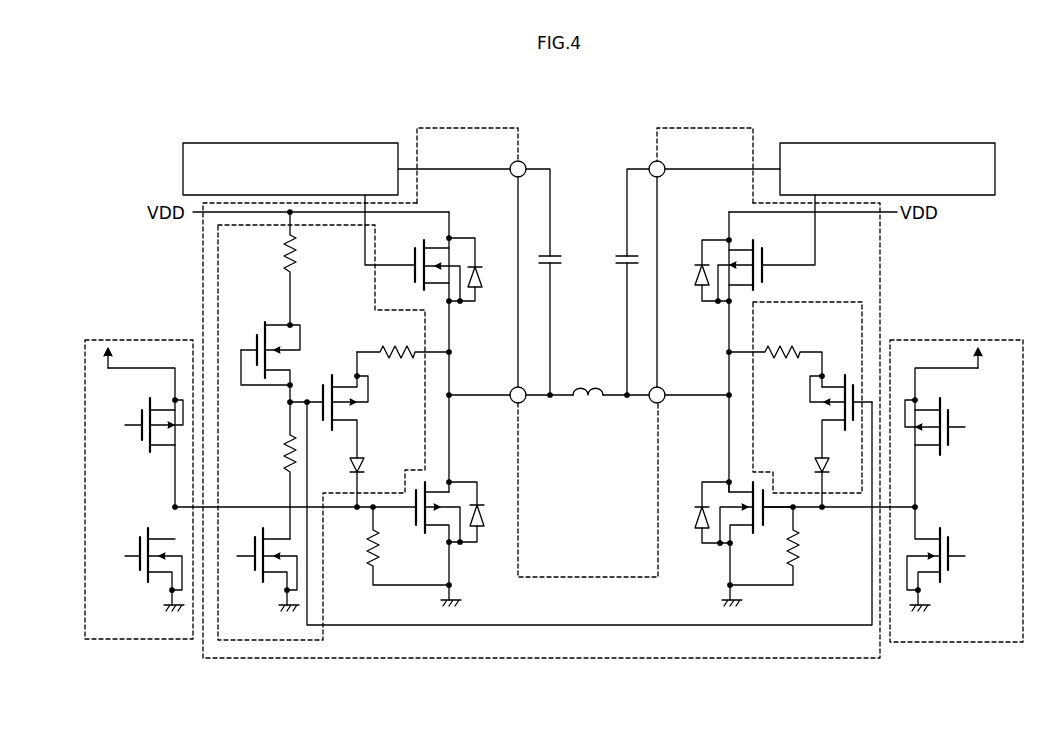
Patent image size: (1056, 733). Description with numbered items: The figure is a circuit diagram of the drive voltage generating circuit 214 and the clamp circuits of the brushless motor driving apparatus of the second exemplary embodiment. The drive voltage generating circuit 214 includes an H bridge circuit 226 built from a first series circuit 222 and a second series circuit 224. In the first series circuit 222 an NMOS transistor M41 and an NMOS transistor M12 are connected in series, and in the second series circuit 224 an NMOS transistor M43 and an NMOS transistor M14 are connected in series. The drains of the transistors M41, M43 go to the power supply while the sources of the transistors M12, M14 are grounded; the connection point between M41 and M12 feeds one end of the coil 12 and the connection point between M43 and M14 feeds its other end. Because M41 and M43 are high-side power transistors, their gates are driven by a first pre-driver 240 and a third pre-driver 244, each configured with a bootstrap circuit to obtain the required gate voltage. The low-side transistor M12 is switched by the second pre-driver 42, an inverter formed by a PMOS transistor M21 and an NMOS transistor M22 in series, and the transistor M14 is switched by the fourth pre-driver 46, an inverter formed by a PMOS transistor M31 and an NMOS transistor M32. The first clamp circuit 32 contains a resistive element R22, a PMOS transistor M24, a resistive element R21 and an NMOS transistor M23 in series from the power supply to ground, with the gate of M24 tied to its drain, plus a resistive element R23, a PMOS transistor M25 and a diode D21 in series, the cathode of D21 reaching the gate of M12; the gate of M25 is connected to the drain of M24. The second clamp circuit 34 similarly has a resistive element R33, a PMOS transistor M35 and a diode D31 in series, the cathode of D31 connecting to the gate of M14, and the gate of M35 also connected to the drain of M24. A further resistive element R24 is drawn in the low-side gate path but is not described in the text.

The first pre-driver 240 is at (332, 143).
The third pre-driver 244 is at (968, 143).
The drive voltage generating circuit 214 is at (478, 128).
The H bridge circuit 226 is at (580, 600).
The first clamp circuit 32 is at (328, 640).
The second clamp circuit 34 is at (822, 302).
The second pre-driver 42 is at (128, 340).
The fourth pre-driver 46 is at (1000, 340).
The first series circuit 222 is at (462, 408).
The second series circuit 224 is at (692, 405).
The coil 12 is at (576, 365).
The resistive element R21 is at (280, 440).
The resistive element R22 is at (272, 270).
The resistive element R23 is at (378, 345).
The resistor R24 is at (362, 573).
The resistive element R33 is at (782, 337).
The NMOS transistor M12 is at (410, 518).
The NMOS transistor M14 is at (693, 495).
The PMOS transistor M21 is at (128, 410).
The NMOS transistor M22 is at (128, 542).
The NMOS transistor M23 is at (228, 570).
The PMOS transistor M24 is at (238, 326).
The PMOS transistor M25 is at (372, 390).
The PMOS transistor M31 is at (990, 430).
The NMOS transistor M32 is at (962, 572).
The PMOS transistor M35 is at (805, 390).
The NMOS transistor M41 is at (483, 250).
The NMOS transistor M43 is at (692, 250).
The diode D21 is at (397, 445).
The diode D31 is at (812, 474).